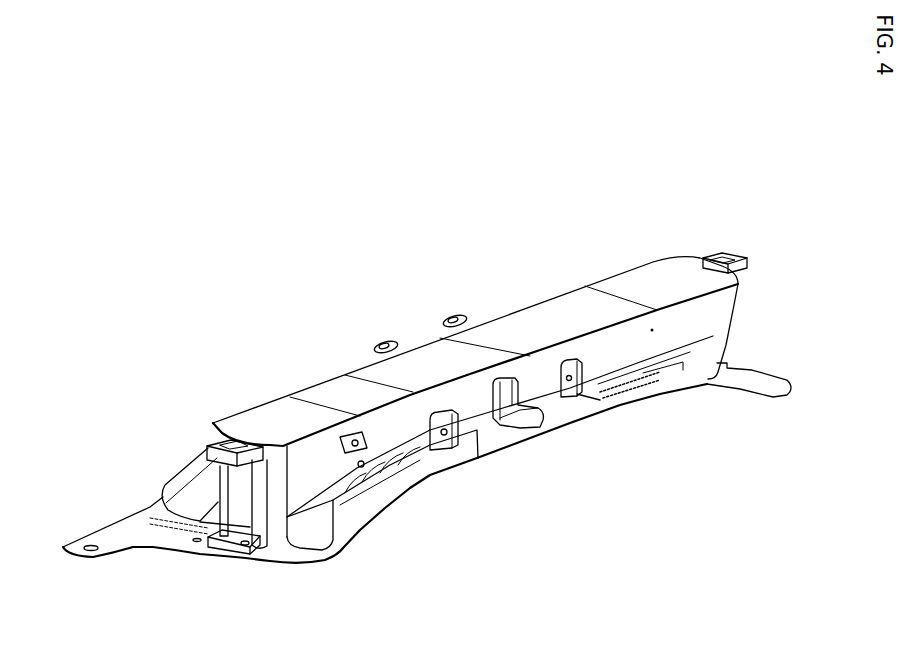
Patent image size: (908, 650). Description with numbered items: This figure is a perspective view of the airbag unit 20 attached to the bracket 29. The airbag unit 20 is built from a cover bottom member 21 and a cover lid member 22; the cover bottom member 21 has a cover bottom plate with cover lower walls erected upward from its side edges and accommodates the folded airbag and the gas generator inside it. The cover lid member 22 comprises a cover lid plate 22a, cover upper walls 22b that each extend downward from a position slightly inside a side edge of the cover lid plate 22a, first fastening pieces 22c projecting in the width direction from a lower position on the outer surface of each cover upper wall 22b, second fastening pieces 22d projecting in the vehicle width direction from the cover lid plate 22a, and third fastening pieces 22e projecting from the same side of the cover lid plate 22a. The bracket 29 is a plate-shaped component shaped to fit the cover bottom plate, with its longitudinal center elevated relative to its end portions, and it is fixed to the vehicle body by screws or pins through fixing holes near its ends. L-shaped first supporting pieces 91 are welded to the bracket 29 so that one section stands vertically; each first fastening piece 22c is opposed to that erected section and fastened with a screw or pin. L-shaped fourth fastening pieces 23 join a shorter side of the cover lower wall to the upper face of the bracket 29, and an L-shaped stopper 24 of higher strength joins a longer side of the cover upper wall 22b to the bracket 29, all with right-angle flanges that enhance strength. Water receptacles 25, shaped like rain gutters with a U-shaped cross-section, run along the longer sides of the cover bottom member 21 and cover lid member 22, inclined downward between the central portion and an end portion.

The airbag unit 20 is at (300, 275).
The cover bottom member 21 is at (700, 355).
The cover lid member 22 is at (300, 385).
The cover lid plate 22a is at (582, 302).
The cover upper wall 22b is at (713, 317).
The first fastening piece 22c is at (577, 390).
The second fastening piece 22d is at (748, 266).
The third fastening piece 22e is at (378, 342).
The fourth fastening piece 23 is at (217, 547).
The stopper 24 is at (533, 420).
The water receptacle 25 is at (407, 472).
The bracket 29 is at (617, 397).
The first supporting piece 91 is at (477, 432).